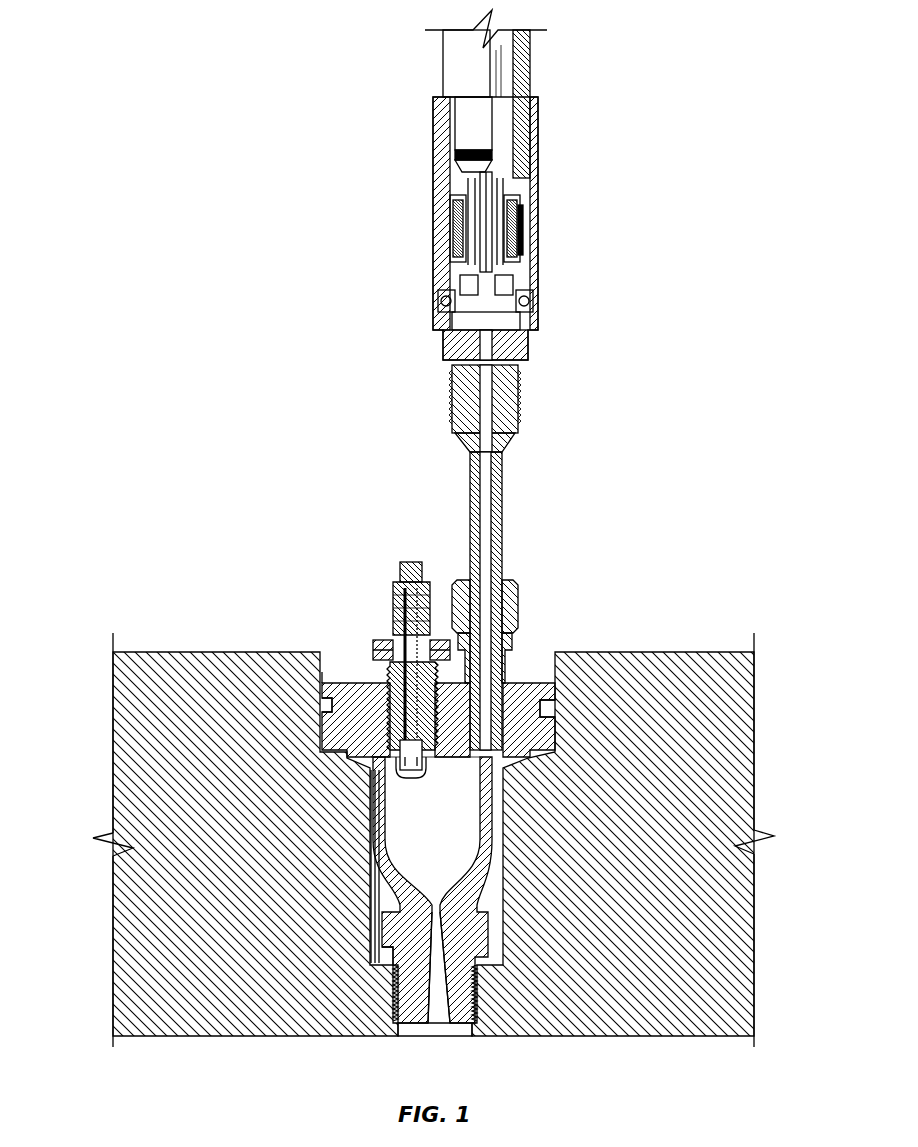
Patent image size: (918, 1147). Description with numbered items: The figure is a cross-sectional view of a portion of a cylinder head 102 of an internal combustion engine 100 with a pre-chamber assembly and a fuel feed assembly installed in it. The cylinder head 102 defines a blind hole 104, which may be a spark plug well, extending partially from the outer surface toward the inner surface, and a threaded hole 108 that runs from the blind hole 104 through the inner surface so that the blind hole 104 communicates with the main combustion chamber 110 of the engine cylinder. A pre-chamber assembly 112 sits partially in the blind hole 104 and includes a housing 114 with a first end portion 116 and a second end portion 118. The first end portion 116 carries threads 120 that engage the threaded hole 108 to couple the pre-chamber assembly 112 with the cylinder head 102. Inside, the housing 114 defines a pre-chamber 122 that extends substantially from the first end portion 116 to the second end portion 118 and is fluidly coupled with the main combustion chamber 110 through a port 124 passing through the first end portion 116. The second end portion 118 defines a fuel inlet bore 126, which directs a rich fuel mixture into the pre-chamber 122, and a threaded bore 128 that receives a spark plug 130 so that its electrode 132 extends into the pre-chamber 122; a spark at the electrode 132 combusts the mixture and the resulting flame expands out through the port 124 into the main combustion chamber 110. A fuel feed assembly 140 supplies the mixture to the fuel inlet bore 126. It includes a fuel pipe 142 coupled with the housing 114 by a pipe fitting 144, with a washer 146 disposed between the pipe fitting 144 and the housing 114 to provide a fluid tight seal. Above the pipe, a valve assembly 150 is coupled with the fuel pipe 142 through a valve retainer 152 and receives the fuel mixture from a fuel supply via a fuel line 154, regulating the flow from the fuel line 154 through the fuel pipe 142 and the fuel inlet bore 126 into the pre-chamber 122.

The internal combustion engine 100 is at (138, 52).
The cylinder head 102 is at (232, 650).
The blind hole 104 is at (316, 663).
The threaded hole 108 is at (475, 1005).
The main combustion chamber 110 is at (251, 1080).
The pre-chamber assembly 112 is at (383, 903).
The housing 114 is at (372, 823).
The first end portion 116 is at (385, 1013).
The second end portion 118 is at (320, 705).
The threads 120 is at (392, 990).
The pre-chamber 122 is at (457, 847).
The port 124 is at (432, 940).
The fuel inlet bore 126 is at (548, 722).
The threaded bore 128 is at (405, 703).
The spark plug 130 is at (408, 562).
The electrode 132 is at (413, 773).
The fuel feed assembly 140 is at (650, 230).
The fuel pipe 142 is at (503, 505).
The pipe fitting 144 is at (520, 605).
The washer 146 is at (527, 683).
The valve assembly 150 is at (545, 203).
The valve retainer 152 is at (518, 403).
The fuel line 154 is at (445, 72).